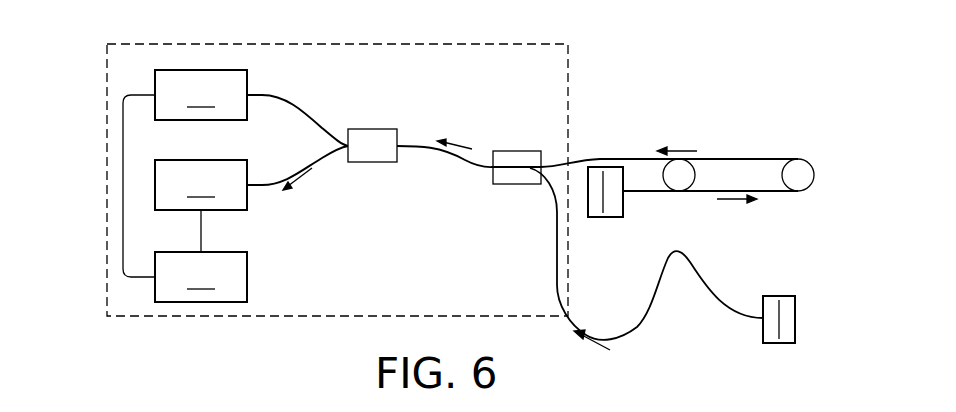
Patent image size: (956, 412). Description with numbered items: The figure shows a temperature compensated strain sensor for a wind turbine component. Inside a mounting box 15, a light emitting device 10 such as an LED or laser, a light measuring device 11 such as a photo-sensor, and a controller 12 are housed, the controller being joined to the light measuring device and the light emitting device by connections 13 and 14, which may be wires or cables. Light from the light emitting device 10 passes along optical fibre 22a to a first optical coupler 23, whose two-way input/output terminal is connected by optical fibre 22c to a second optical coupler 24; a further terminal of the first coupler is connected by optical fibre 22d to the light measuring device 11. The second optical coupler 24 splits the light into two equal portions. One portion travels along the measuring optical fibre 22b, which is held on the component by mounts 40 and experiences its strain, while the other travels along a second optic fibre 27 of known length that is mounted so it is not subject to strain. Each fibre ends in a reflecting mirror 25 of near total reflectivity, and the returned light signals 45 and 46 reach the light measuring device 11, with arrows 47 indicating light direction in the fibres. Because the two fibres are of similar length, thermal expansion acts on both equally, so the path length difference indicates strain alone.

The light emitting device 10 is at (201, 95).
The light measuring device 11 is at (201, 185).
The controller 12 is at (201, 277).
The connection 13 is at (203, 231).
The connection 14 is at (122, 183).
The mounting box 15 is at (568, 70).
The optical fibre 22a is at (294, 99).
The optical fibre 22b is at (738, 157).
The optical fibre 22c is at (417, 145).
The optical fibre 22d is at (300, 165).
The first optical coupler 23 is at (372, 128).
The second optical coupler 24 is at (515, 150).
The reflecting mirror 25 is at (605, 217).
The second optic fibre 27 is at (647, 318).
The mounts 40 is at (679, 180).
The light signal 45 is at (590, 350).
The light signal 46 is at (676, 145).
The propagation direction arrow 47 is at (300, 180).